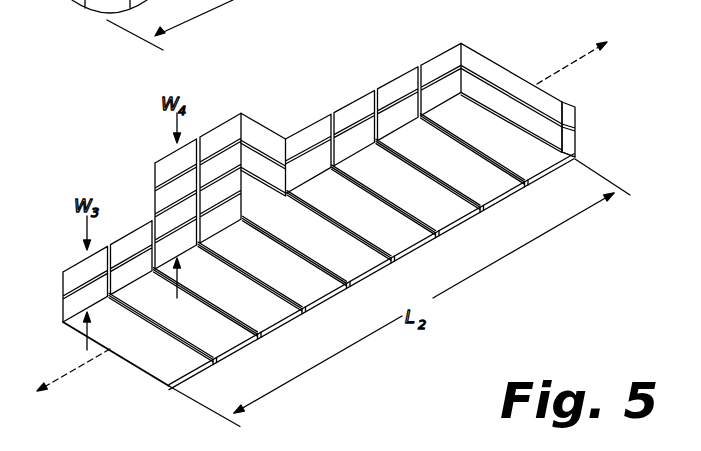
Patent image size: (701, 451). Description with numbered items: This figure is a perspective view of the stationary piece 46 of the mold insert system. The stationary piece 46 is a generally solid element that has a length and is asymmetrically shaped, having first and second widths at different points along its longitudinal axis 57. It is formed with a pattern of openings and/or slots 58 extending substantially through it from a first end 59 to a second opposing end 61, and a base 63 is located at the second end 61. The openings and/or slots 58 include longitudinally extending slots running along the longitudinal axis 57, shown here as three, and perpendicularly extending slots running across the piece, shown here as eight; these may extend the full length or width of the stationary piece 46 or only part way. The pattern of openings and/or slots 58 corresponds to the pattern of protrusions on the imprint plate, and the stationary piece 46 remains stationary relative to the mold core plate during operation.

The stationary piece 46 is at (128, 188).
The longitudinal axis 57 is at (82, 367).
The openings and/or slots 58 is at (197, 138).
The first end 59 is at (460, 42).
The second opposing end 61 is at (576, 106).
The base 63 is at (576, 148).